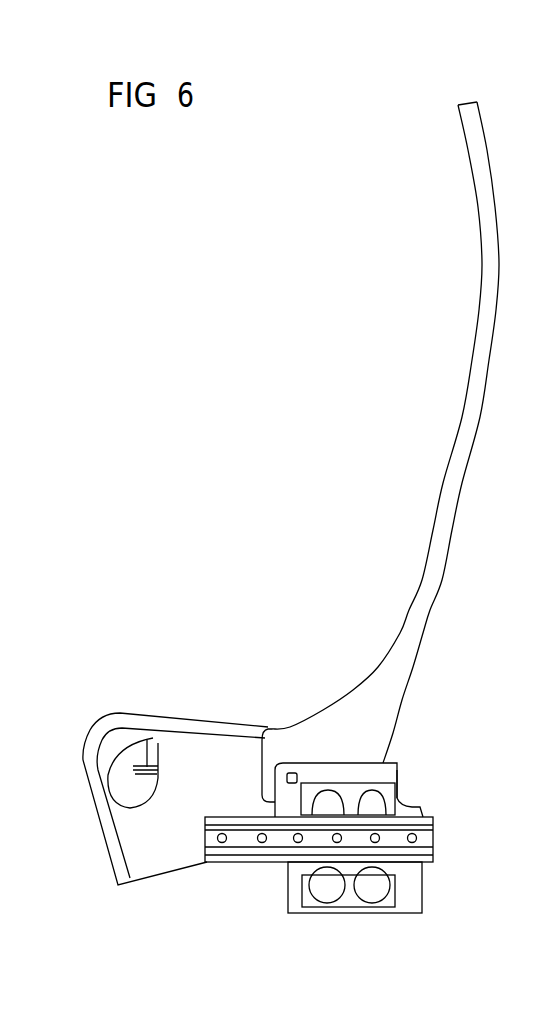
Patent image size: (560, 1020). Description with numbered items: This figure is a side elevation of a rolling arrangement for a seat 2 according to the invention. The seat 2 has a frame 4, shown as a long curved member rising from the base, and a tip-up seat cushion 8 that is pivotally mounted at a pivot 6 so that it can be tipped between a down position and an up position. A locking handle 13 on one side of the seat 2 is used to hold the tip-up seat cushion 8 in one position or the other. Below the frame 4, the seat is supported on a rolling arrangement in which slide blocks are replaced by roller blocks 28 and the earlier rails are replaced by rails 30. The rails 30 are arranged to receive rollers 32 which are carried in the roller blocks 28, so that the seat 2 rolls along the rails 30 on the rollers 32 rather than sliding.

The seat 2 is at (404, 331).
The frame 4 is at (439, 563).
The pivot 6 is at (297, 778).
The tip-up seat cushion 8 is at (193, 798).
The locking handle 13 is at (144, 742).
The roller block 28 is at (400, 777).
The rail 30 is at (435, 817).
The roller 32 is at (380, 790).